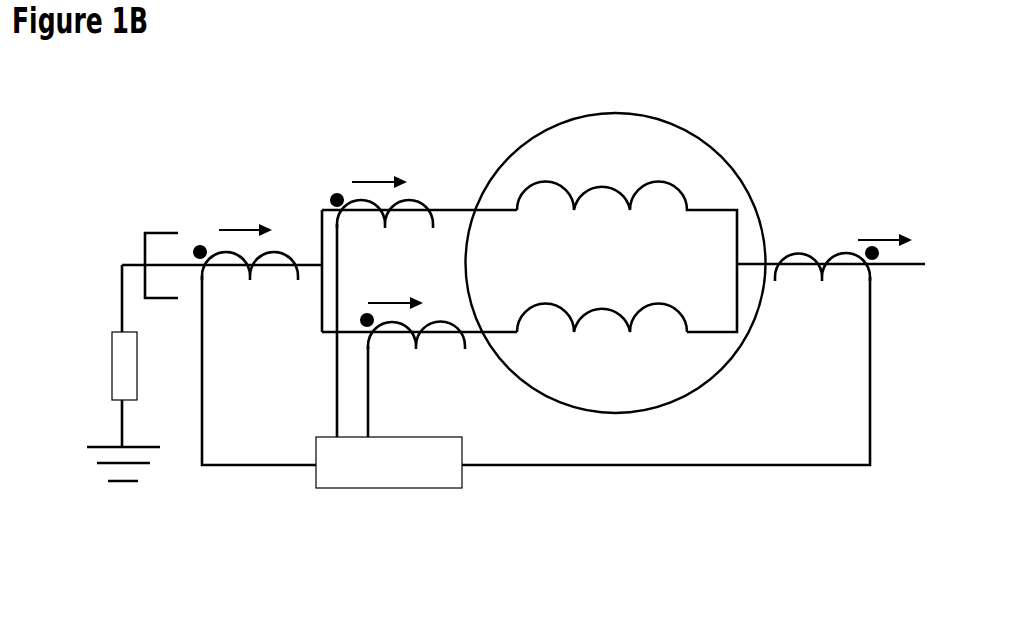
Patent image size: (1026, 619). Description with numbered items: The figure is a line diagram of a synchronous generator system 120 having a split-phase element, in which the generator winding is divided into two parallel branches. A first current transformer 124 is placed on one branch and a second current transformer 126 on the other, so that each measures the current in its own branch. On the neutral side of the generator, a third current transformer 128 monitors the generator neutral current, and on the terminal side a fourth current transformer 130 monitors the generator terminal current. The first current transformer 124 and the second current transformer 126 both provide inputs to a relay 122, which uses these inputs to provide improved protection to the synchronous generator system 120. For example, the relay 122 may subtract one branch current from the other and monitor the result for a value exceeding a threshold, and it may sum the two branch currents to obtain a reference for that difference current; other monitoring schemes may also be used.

The synchronous generator system 120 is at (156, 146).
The relay 122 is at (390, 488).
The first current transformer 124 is at (423, 202).
The second current transformer 126 is at (457, 323).
The third current transformer 128 is at (297, 253).
The fourth current transformer 130 is at (808, 253).